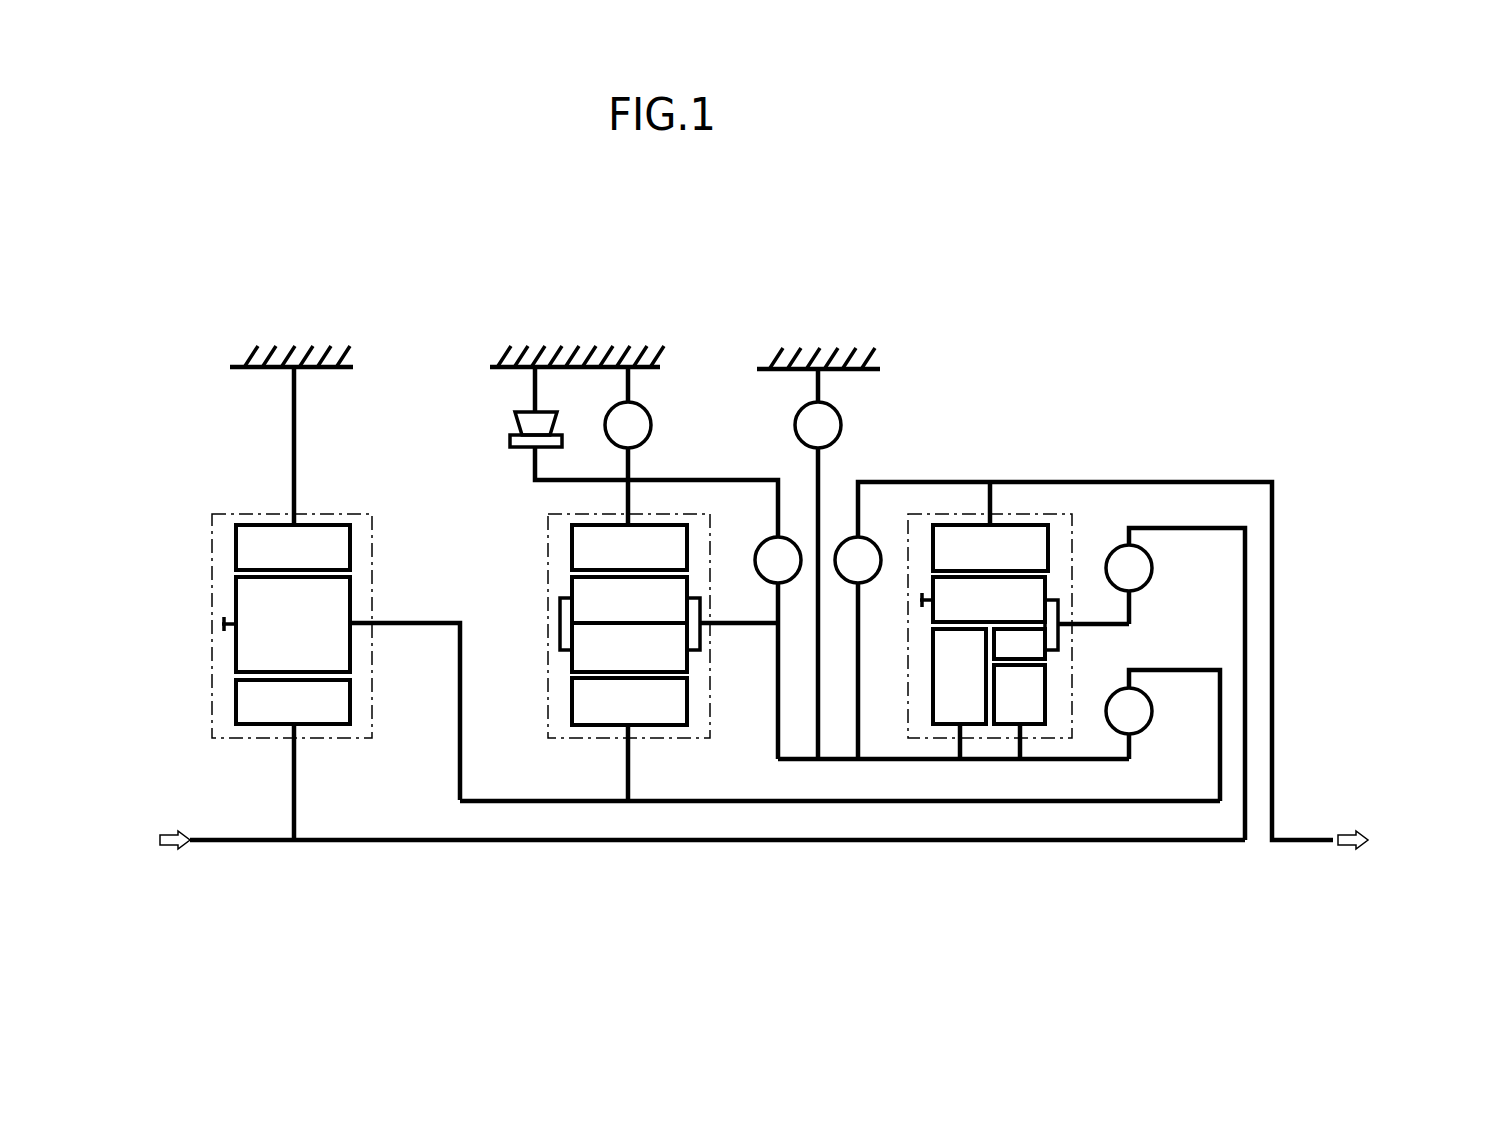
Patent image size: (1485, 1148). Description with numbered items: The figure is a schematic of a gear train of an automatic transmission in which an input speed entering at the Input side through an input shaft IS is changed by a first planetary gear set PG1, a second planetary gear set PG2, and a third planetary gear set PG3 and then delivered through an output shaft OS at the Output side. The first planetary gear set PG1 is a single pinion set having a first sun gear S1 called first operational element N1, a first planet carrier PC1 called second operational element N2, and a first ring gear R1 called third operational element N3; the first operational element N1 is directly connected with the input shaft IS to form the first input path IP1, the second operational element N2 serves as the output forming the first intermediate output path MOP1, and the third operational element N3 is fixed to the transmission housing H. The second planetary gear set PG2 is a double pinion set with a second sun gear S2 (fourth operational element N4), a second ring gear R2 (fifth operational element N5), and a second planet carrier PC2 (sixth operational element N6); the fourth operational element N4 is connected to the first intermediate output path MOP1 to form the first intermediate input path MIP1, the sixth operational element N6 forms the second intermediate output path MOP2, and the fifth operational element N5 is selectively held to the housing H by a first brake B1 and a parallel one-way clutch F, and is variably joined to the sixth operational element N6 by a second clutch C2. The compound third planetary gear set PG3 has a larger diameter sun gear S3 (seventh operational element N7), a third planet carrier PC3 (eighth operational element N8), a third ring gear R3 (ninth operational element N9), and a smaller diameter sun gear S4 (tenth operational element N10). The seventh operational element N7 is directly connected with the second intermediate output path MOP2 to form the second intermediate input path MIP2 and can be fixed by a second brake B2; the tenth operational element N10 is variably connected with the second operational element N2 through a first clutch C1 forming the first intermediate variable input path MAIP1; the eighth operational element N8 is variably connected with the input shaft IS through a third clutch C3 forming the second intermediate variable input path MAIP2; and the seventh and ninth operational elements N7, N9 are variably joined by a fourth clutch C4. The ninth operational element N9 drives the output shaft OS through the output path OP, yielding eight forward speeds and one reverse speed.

The transmission housing H is at (312, 346).
The one-way clutch F is at (497, 424).
The first brake B1 is at (628, 446).
The second brake B2 is at (818, 564).
The first clutch C1 is at (1163, 735).
The second clutch C2 is at (778, 648).
The third clutch C3 is at (1175, 684).
The fourth clutch C4 is at (1084, 661).
The first planetary gear set PG1 is at (336, 705).
The second planetary gear set PG2 is at (589, 707).
The third planetary gear set PG3 is at (1052, 690).
The first ring gear R1 is at (293, 547).
The first planet carrier PC1 is at (341, 688).
The first sun gear S1 is at (293, 702).
The second ring gear R2 is at (629, 547).
The second planet carrier PC2 is at (584, 632).
The second sun gear S2 is at (629, 701).
The third ring gear R3 is at (990, 548).
The third planet carrier PC3 is at (1058, 618).
The larger diameter sun gear S3 is at (959, 694).
The smaller diameter sun gear S4 is at (1019, 712).
The first operational element N1 is at (293, 702).
The second operational element N2 is at (416, 630).
The third operational element N3 is at (293, 547).
The fourth operational element N4 is at (629, 701).
The fifth operational element N5 is at (629, 547).
The sixth operational element N6 is at (560, 623).
The seventh operational element N7 is at (959, 694).
The eighth operational element N8 is at (1062, 628).
The ninth operational element N9 is at (990, 548).
The tenth operational element N10 is at (1019, 712).
The input shaft IS is at (222, 843).
The output shaft OS is at (1310, 845).
The first input path IP1 is at (280, 756).
The first intermediate input path MIP1 is at (613, 762).
The second intermediate input path MIP2 is at (978, 753).
The first intermediate output path MOP1 is at (434, 608).
The second intermediate output path MOP2 is at (750, 637).
The first intermediate variable input path MAIP1 is at (1160, 728).
The second intermediate variable input path MAIP2 is at (1160, 505).
The output path OP is at (1250, 458).
The input Input is at (144, 841).
The output Output is at (1394, 841).